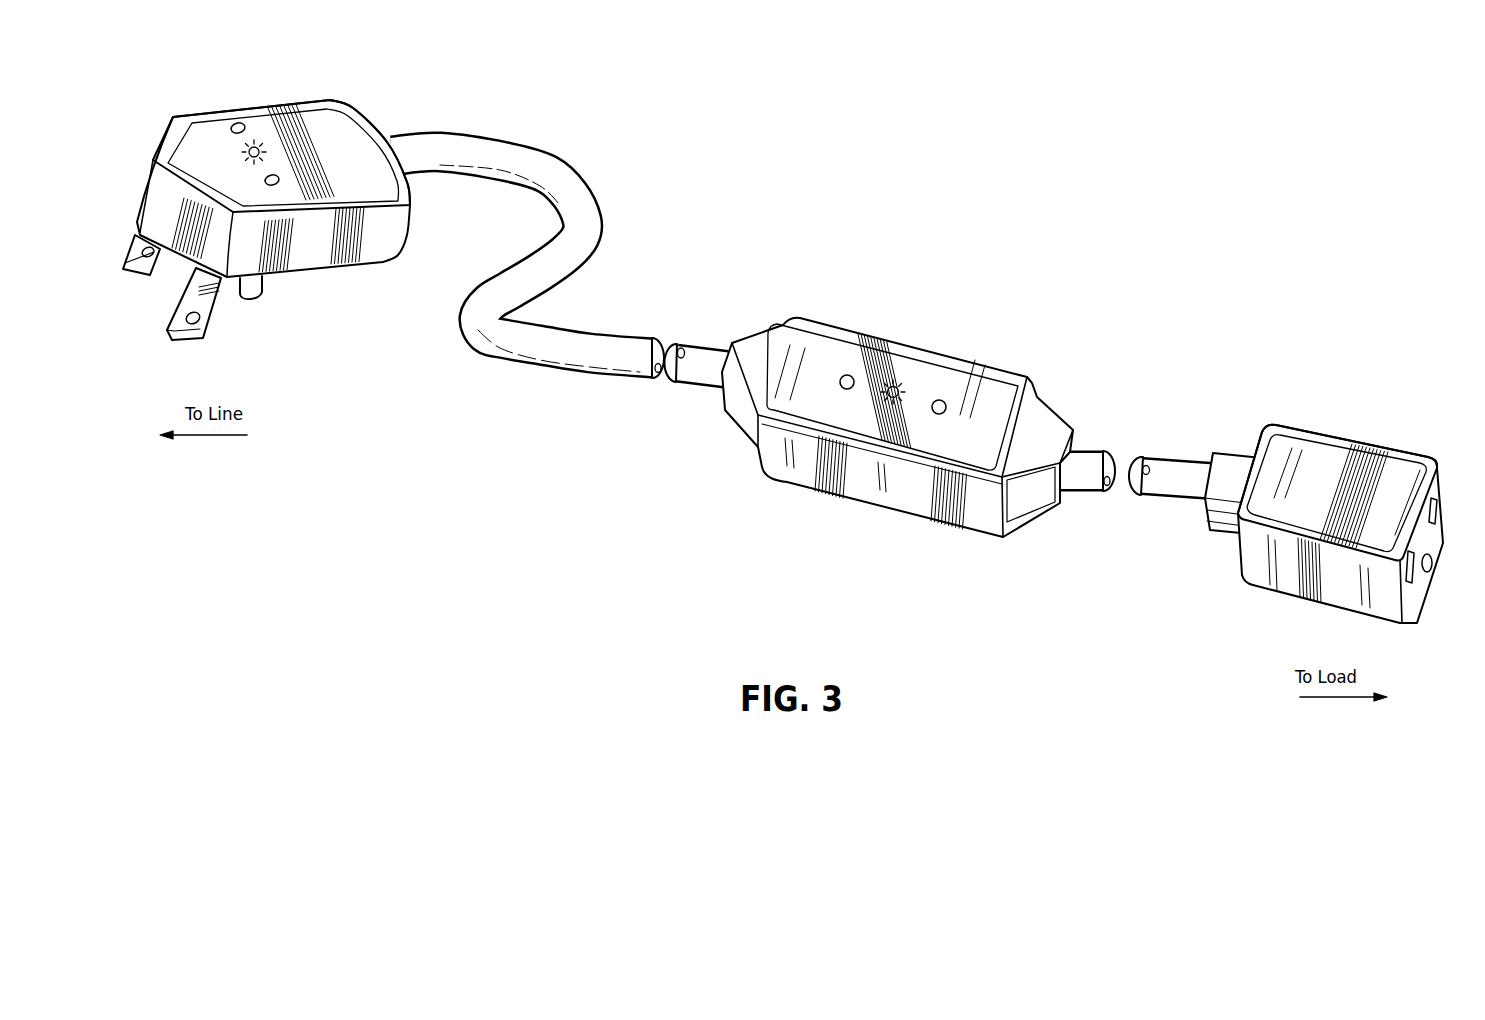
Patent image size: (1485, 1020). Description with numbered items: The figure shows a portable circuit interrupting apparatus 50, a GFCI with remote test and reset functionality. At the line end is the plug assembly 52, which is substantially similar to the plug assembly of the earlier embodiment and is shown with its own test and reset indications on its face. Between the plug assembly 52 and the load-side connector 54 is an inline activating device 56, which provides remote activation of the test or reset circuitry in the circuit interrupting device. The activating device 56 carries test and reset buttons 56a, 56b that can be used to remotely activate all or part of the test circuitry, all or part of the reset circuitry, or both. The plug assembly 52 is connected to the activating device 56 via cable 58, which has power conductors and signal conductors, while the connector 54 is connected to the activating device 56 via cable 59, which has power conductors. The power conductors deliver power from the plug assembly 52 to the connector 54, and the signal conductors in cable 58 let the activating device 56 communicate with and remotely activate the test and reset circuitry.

The portable circuit interrupting apparatus 50 is at (508, 507).
The plug assembly 52 is at (325, 285).
The connector 54 is at (1354, 432).
The inline activating device 56 is at (850, 441).
The test button 56a is at (847, 389).
The reset button 56b is at (938, 414).
The cable 58 is at (453, 128).
The cable 59 is at (1153, 506).